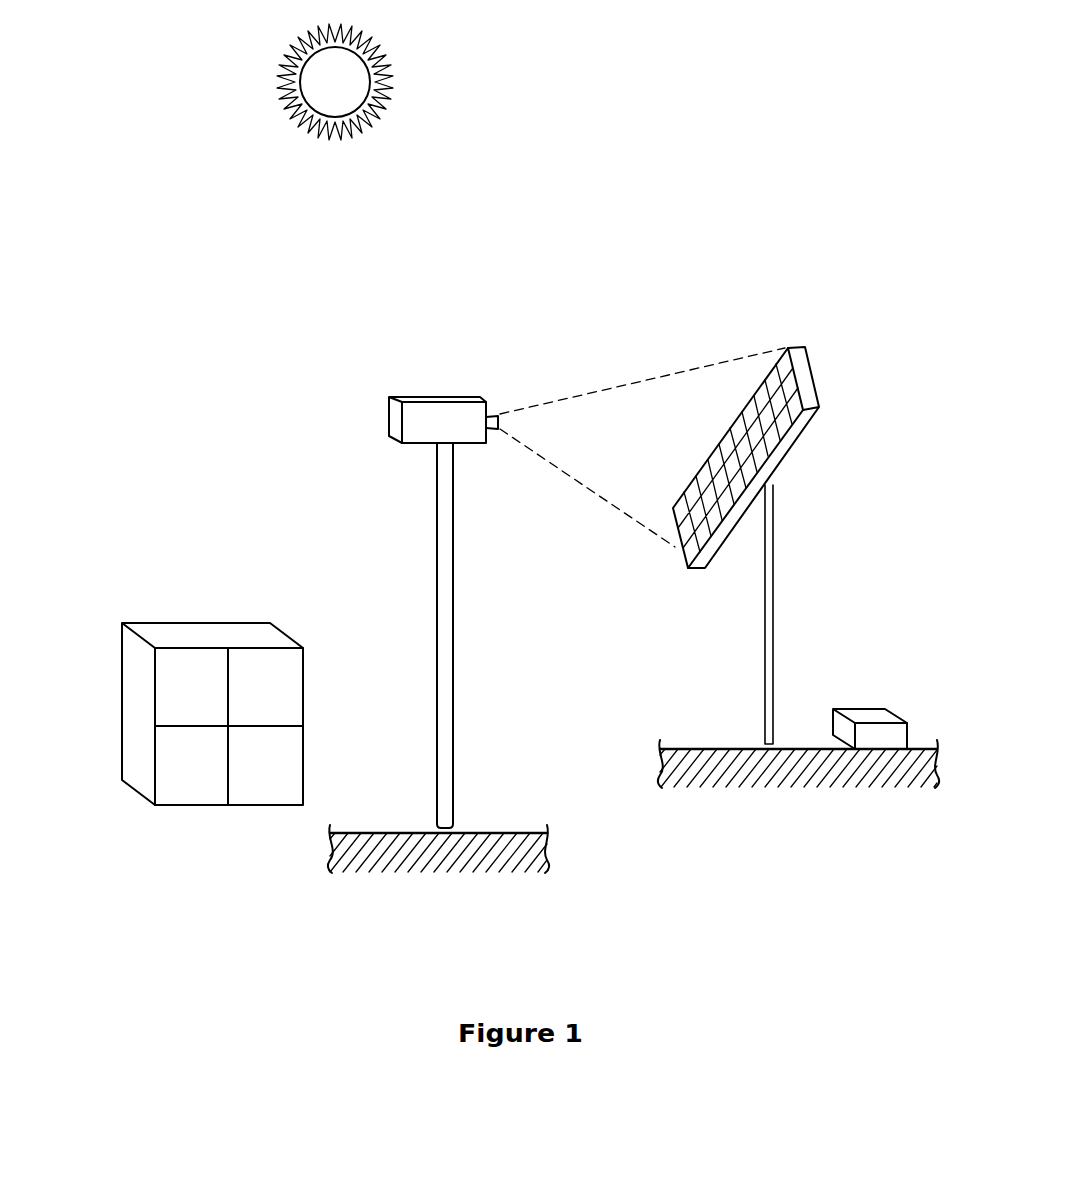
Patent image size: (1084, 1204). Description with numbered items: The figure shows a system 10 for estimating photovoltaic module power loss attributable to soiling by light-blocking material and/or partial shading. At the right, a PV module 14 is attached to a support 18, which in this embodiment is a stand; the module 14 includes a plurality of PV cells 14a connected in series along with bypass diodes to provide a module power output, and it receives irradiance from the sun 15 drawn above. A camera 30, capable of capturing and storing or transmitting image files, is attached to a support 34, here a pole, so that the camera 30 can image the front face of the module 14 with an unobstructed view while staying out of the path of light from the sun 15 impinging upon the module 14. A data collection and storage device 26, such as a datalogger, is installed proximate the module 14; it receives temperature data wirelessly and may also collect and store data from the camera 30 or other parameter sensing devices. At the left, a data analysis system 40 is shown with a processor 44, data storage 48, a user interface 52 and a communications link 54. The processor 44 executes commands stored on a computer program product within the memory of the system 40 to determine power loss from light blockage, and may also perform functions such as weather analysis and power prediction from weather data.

The system 10 is at (318, 224).
The PV module 14 is at (774, 457).
The solar cells 14a is at (767, 445).
The sun 15 is at (380, 52).
The support 18 is at (775, 581).
The data collection and storage device 26 is at (890, 712).
The camera 30 is at (447, 400).
The support 34 is at (437, 527).
The data analysis system 40 is at (176, 681).
The processor 44 is at (191, 687).
The data storage 48 is at (265, 687).
The user interface 52 is at (191, 765).
The communications link 54 is at (265, 765).